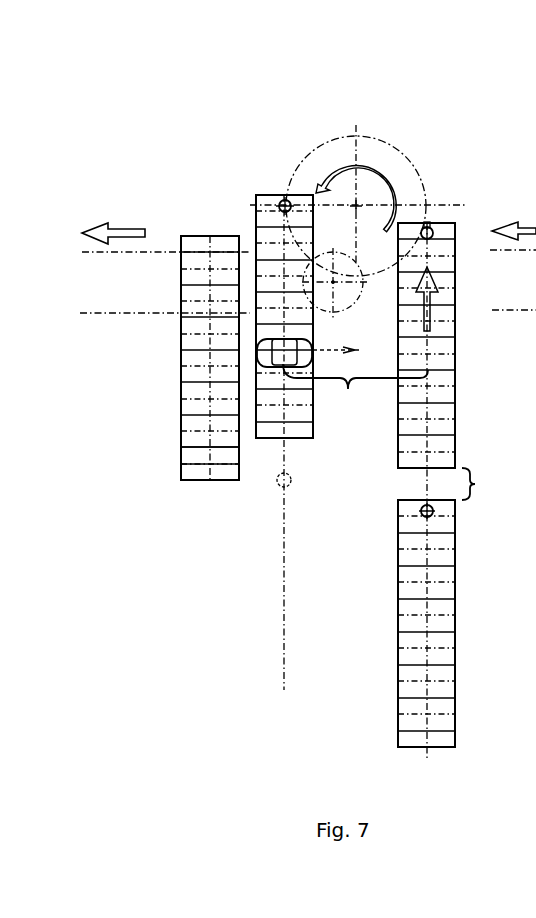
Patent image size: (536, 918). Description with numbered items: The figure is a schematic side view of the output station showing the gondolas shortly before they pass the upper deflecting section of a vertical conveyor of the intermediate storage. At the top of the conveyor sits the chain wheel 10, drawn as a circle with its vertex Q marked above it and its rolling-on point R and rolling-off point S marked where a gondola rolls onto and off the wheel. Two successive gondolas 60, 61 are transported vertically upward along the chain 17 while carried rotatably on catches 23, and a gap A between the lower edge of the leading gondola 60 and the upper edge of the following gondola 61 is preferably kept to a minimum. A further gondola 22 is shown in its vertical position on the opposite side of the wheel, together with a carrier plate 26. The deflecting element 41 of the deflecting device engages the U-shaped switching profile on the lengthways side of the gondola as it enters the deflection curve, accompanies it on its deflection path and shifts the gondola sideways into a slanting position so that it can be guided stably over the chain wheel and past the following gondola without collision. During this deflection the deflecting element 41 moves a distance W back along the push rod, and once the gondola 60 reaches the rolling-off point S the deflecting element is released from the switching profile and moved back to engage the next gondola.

The chain wheel 10 is at (385, 152).
The chain 17 is at (283, 625).
The gondola 22 is at (178, 372).
The catch 23 is at (276, 485).
The carrier plate 26 is at (207, 474).
The deflecting element 41 is at (300, 350).
The gondola 60 is at (375, 350).
The gondola 61 is at (457, 624).
The rolling-off point S is at (283, 204).
The vertex Q is at (355, 123).
The rolling-on point R is at (428, 206).
The distance W is at (355, 394).
The gap A is at (475, 484).